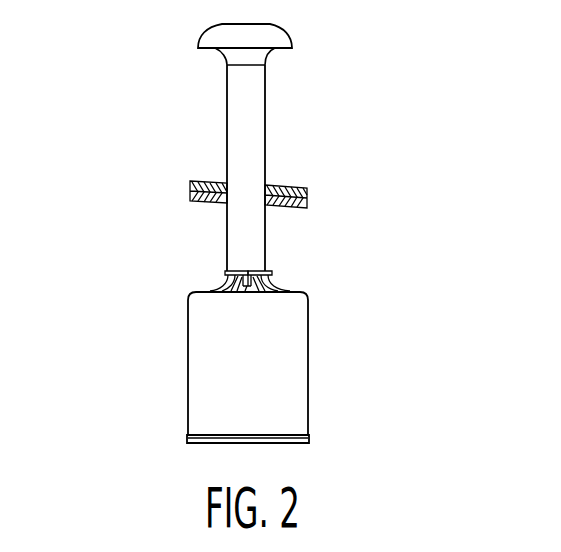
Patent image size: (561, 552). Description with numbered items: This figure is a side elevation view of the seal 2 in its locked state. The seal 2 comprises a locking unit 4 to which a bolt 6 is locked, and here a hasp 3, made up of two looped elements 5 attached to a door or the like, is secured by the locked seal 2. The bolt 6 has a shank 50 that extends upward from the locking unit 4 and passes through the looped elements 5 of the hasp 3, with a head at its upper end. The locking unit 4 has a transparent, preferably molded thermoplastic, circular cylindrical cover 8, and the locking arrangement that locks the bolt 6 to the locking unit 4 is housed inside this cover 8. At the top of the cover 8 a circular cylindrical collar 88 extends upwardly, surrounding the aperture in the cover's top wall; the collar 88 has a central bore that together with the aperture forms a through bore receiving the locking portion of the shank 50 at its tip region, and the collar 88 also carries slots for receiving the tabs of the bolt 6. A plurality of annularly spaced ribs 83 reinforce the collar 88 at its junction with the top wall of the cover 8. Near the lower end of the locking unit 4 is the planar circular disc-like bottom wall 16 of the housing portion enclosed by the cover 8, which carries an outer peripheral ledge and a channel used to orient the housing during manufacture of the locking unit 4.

The seal 2 is at (299, 151).
The shank 50 is at (255, 100).
The bolt 6 is at (226, 144).
The hasp 3 is at (310, 196).
The looped elements 5 is at (191, 181).
The locking unit 4 is at (313, 389).
The collar 88 is at (222, 268).
The ribs 83 is at (277, 268).
The cover 8 is at (200, 333).
The bottom wall 16 is at (190, 440).